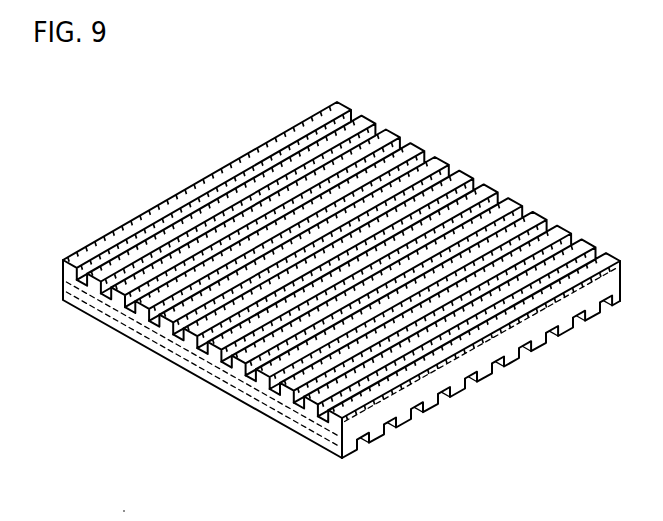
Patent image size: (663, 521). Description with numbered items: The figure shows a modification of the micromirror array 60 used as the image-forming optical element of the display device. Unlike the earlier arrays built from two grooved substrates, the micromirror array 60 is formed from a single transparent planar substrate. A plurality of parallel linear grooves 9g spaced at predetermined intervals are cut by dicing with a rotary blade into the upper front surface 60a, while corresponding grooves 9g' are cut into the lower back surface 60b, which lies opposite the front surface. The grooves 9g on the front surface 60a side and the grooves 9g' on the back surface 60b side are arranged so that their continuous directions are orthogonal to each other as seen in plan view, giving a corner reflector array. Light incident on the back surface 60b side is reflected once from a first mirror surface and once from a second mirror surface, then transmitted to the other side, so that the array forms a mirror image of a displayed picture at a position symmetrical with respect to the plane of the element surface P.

The micromirror array 60 is at (203, 172).
The upper front surface 60a is at (541, 220).
The lower back surface 60b is at (297, 440).
The linear grooves 9g is at (202, 363).
The grooves 9g' is at (486, 402).
The element surface P is at (107, 305).